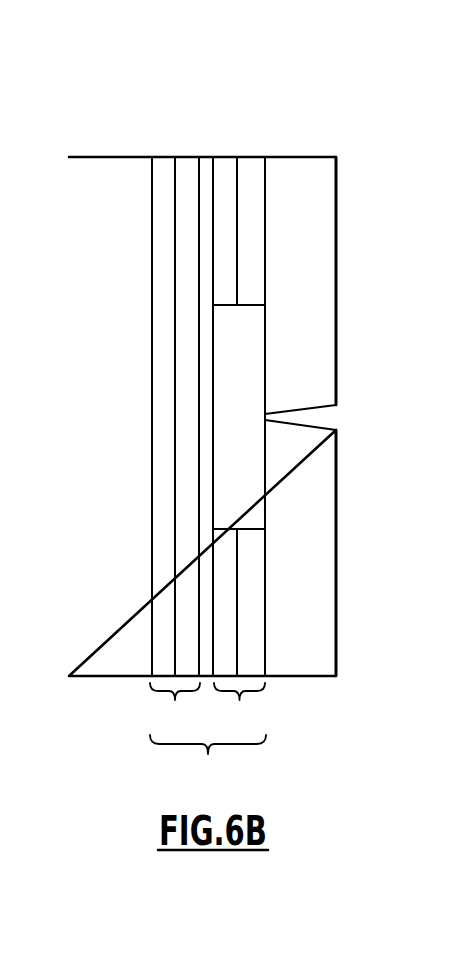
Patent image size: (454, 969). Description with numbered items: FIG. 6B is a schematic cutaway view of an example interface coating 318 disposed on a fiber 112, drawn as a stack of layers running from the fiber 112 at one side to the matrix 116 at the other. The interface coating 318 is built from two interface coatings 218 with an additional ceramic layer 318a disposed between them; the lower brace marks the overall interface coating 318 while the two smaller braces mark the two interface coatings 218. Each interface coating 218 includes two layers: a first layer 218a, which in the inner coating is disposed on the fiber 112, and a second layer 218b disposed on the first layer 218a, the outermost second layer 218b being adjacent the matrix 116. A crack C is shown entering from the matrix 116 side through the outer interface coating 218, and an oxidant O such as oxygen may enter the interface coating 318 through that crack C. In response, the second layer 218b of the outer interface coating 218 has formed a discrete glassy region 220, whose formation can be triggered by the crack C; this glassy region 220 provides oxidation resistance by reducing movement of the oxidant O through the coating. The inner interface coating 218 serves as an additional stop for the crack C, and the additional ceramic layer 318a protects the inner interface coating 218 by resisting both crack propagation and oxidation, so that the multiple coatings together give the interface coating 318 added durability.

The fiber 112 is at (103, 659).
The matrix 116 is at (303, 662).
The interface coating 218 is at (207, 710).
The first layer 218a is at (158, 165).
The second layer 218b is at (185, 168).
The interface coating 318 is at (208, 761).
The additional ceramic layer 318a is at (208, 172).
The discrete glassy regions 220 is at (245, 360).
The oxidant O is at (260, 418).
The crack C is at (338, 422).